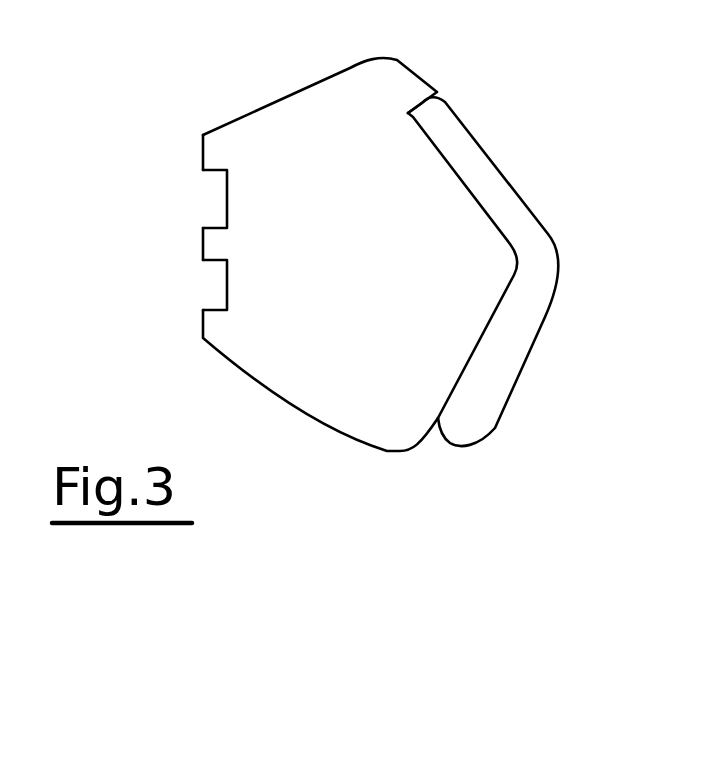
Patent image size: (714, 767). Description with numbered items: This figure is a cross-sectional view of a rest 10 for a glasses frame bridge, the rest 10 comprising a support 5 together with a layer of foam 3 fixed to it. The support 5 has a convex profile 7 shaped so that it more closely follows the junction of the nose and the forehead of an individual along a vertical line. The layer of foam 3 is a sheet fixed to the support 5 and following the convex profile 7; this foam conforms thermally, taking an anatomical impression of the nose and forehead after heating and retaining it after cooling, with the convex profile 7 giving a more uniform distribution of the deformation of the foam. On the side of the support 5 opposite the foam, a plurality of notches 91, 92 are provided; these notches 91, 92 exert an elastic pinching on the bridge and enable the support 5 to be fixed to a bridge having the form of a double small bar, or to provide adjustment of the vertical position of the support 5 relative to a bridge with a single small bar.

The layer of foam 3 is at (466, 140).
The support 5 is at (288, 136).
The convex profile 7 is at (463, 180).
The rest 10 is at (405, 555).
The notch 91 is at (227, 200).
The notch 92 is at (227, 285).